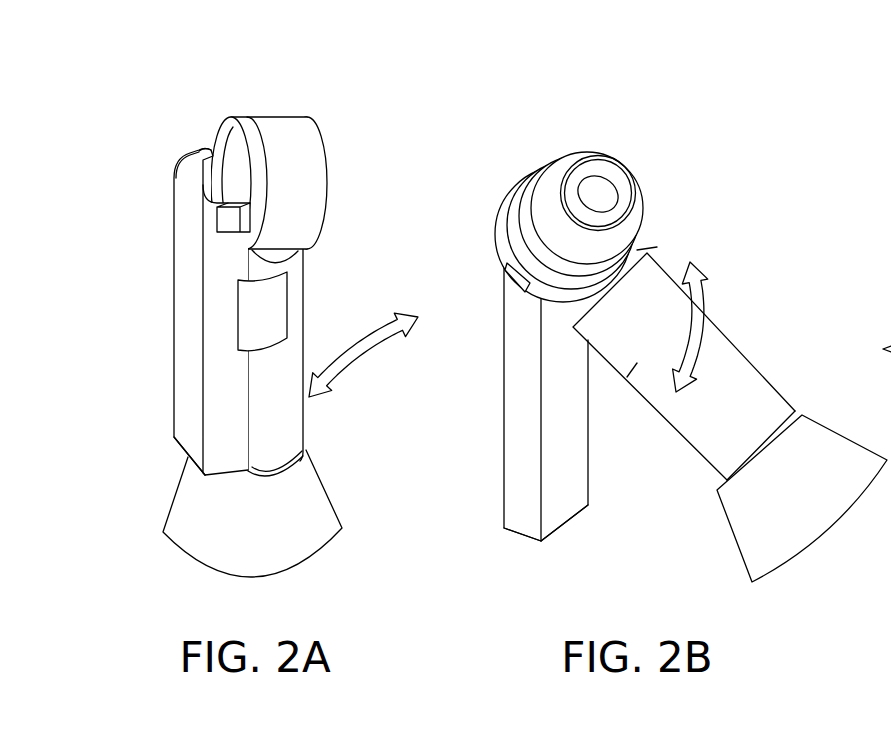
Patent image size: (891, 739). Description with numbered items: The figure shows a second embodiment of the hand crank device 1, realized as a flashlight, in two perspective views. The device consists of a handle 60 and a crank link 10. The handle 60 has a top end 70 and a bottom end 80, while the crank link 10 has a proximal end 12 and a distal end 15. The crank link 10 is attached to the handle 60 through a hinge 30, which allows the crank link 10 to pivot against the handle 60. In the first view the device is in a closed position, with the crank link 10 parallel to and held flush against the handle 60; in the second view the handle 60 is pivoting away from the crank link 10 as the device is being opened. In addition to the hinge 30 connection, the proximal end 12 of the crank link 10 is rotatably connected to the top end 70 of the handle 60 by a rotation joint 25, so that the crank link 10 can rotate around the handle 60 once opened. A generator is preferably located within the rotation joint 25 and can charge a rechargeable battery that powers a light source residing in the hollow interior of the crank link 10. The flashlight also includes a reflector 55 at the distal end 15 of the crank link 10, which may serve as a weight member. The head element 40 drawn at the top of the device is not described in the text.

In FIG. 2A, the hand crank device 1 is at (147, 80).
In FIG. 2B, the hand crank device 1 is at (502, 80).
In FIG. 2A, the crank link 10 is at (299, 354).
In FIG. 2B, the crank link 10 is at (690, 357).
In FIG. 2A, the proximal end 12 is at (290, 258).
In FIG. 2B, the proximal end 12 is at (640, 250).
In FIG. 2A, the distal end 15 is at (292, 438).
In FIG. 2B, the distal end 15 is at (783, 417).
In FIG. 2A, the rotation joint 25 is at (250, 133).
In FIG. 2A, the hinge 30 is at (201, 150).
In FIG. 2A, the rotatable head 40 is at (295, 163).
In FIG. 2B, the rotatable head 40 is at (563, 157).
In FIG. 2A, the reflector 55 is at (293, 553).
In FIG. 2B, the reflector 55 is at (815, 513).
In FIG. 2A, the handle 60 is at (190, 317).
In FIG. 2B, the handle 60 is at (577, 425).
In FIG. 2A, the top end 70 is at (188, 167).
In FIG. 2B, the top end 70 is at (505, 262).
In FIG. 2A, the bottom end 80 is at (192, 423).
In FIG. 2B, the bottom end 80 is at (567, 503).